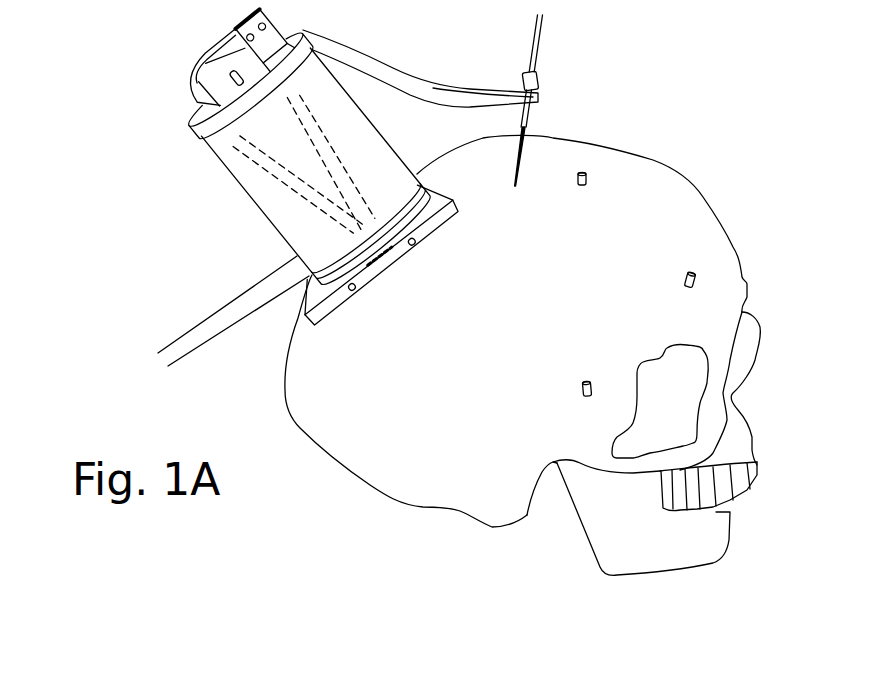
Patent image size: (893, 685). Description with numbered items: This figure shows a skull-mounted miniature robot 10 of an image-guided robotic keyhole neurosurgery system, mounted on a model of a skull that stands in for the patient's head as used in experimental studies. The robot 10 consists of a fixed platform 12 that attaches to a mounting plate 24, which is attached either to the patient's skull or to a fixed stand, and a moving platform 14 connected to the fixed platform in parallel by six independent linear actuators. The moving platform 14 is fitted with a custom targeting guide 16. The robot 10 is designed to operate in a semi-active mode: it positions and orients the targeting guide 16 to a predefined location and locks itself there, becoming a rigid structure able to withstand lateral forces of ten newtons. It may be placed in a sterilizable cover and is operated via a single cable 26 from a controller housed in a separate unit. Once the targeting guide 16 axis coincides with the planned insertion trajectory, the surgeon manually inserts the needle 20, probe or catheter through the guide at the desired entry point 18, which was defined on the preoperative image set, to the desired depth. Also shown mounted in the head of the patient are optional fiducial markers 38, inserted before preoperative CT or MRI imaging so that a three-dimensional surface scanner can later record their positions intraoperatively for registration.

The robot 10 is at (373, 129).
The fixed platform 12 is at (423, 191).
The moving platform 14 is at (209, 141).
The targeting guide 16 is at (538, 83).
The entry point 18 is at (515, 188).
The needle 20 is at (524, 153).
The mounting plate 24 is at (428, 237).
The cable 26 is at (222, 307).
The fiducial markers 38 is at (588, 180).